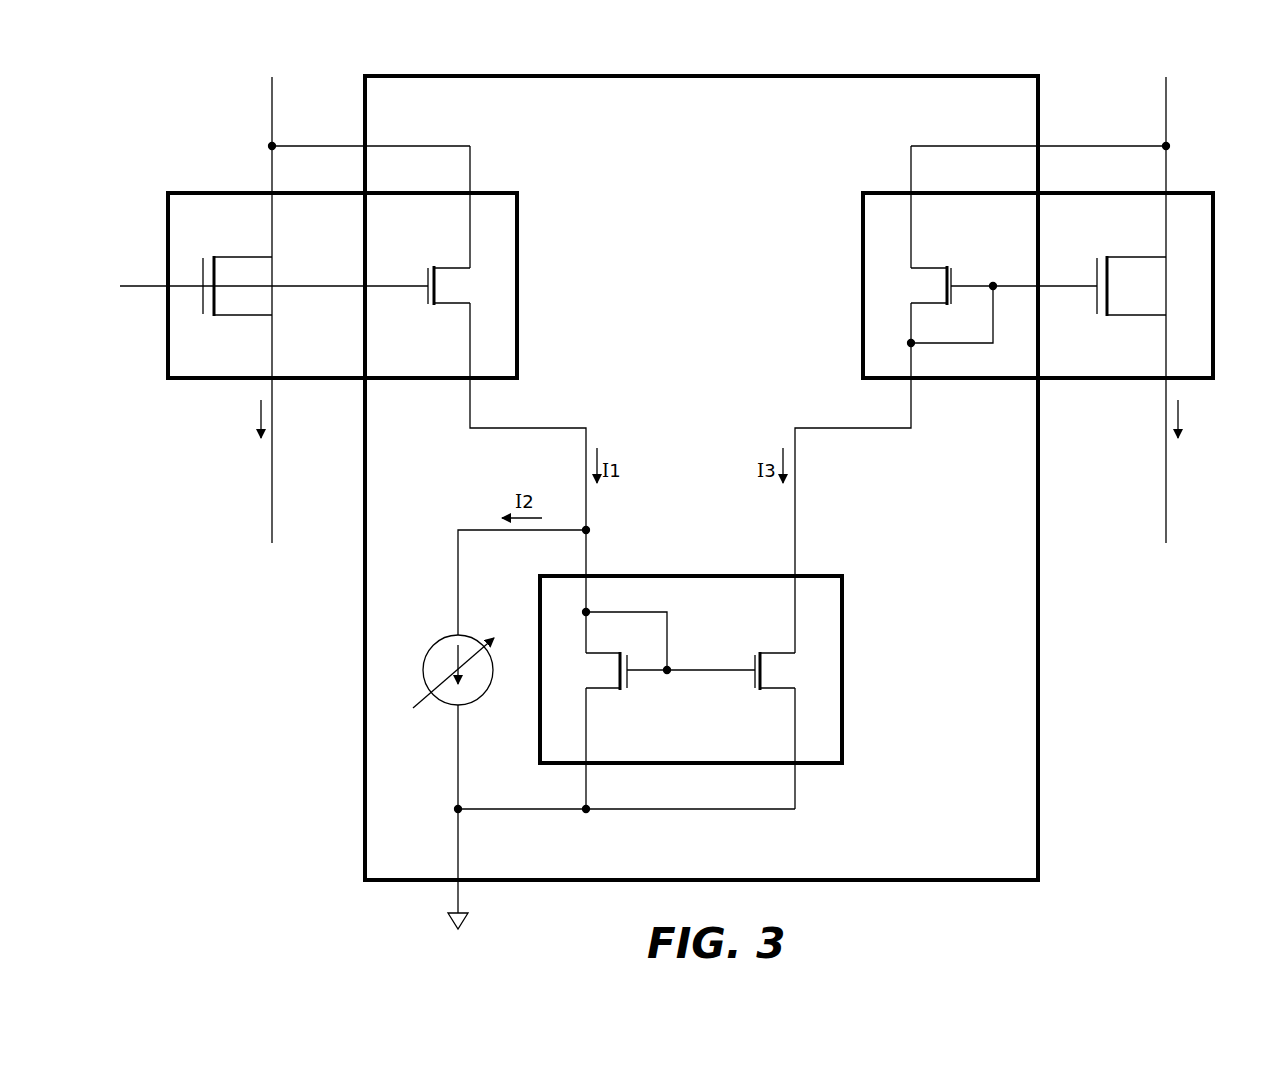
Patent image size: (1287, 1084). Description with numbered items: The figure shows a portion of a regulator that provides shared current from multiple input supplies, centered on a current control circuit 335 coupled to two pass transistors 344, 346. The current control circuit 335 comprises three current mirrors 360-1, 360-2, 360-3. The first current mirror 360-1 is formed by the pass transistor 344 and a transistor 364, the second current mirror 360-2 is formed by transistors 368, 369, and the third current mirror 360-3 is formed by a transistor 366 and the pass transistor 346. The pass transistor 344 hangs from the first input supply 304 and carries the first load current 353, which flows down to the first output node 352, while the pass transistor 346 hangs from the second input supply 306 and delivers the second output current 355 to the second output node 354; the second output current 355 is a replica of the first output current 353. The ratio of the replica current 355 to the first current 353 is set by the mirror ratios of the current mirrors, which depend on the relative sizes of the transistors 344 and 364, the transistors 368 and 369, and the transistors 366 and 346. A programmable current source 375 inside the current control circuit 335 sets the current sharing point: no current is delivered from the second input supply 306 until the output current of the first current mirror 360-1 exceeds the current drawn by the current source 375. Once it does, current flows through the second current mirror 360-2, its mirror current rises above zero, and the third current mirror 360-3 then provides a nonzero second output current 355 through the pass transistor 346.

The input supply 304 is at (272, 112).
The input supply 306 is at (1166, 112).
The current control circuit 335 is at (593, 88).
The pass transistor 344 is at (243, 302).
The pass transistor 346 is at (1136, 303).
The first output voltage node VOUT_1 352 is at (228, 578).
The output current 353 is at (203, 437).
The second output voltage node VOUT_2 354 is at (1213, 578).
The output current 355 is at (1224, 437).
The current mirror 360-1 is at (505, 228).
The current mirror 360-2 is at (830, 613).
The current mirror 360-3 is at (876, 228).
The transistor 364 is at (455, 297).
The transistor 366 is at (923, 287).
The transistor 368 is at (603, 676).
The transistor 369 is at (778, 676).
The programmable current source 375 is at (435, 657).